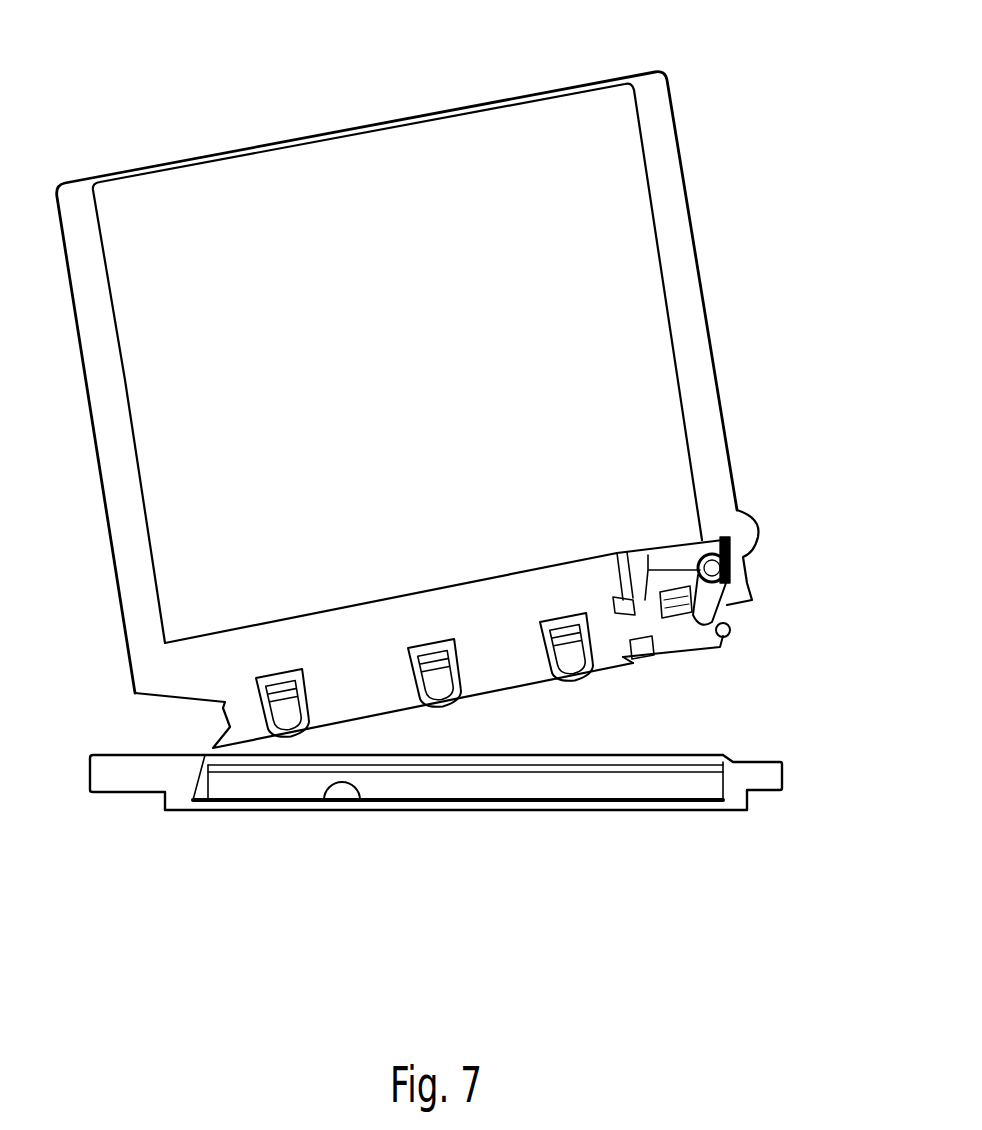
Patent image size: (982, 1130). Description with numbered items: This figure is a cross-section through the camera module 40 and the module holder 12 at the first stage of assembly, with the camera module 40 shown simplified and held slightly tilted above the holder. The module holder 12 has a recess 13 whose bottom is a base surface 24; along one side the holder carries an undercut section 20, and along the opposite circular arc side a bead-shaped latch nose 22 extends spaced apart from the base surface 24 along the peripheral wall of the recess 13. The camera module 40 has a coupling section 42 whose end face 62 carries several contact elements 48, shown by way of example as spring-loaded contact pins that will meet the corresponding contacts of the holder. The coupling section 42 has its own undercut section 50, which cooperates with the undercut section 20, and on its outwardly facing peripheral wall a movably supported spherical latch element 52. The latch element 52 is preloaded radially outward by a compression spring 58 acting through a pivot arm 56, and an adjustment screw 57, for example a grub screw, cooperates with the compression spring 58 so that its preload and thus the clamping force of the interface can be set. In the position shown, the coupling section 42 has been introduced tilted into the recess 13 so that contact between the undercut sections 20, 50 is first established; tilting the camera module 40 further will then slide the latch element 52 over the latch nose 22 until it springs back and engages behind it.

The module holder 12 is at (732, 795).
The recess 13 is at (508, 785).
The undercut section 20 is at (193, 768).
The latch nose 22 is at (730, 772).
The base surface 24 is at (325, 800).
The camera module 40 is at (308, 235).
The coupling section 42 is at (800, 590).
The contact elements 48 is at (307, 703).
The undercut section 50 is at (227, 727).
The latch element 52 is at (727, 635).
The pivot arm 56 is at (742, 587).
The adjustment screw 57 is at (637, 657).
The compression spring 58 is at (678, 620).
The end face 62 is at (514, 688).